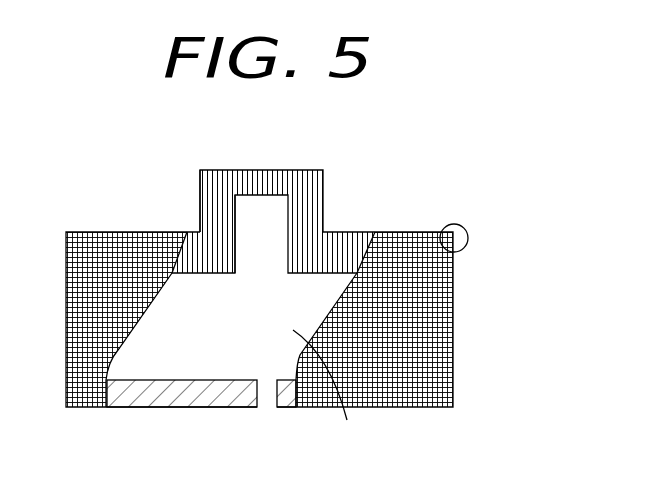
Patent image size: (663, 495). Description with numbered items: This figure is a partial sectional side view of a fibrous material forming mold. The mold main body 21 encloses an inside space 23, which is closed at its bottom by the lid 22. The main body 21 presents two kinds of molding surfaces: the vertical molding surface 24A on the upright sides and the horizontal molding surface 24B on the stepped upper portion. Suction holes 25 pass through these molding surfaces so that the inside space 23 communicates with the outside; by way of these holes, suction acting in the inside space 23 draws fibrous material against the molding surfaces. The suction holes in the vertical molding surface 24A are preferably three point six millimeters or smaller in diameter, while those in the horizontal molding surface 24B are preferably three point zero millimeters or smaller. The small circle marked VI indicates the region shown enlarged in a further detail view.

The mold main body 21 is at (306, 291).
The lid 22 is at (200, 393).
The inside space 23 is at (343, 405).
The vertical molding surface 24A is at (453, 313).
The horizontal molding surface 24B is at (250, 196).
The suction holes 25 is at (207, 202).
The detail circle VI is at (465, 229).